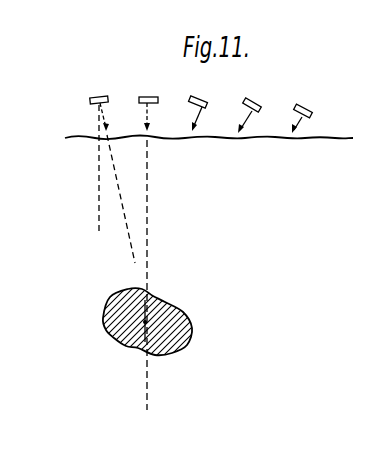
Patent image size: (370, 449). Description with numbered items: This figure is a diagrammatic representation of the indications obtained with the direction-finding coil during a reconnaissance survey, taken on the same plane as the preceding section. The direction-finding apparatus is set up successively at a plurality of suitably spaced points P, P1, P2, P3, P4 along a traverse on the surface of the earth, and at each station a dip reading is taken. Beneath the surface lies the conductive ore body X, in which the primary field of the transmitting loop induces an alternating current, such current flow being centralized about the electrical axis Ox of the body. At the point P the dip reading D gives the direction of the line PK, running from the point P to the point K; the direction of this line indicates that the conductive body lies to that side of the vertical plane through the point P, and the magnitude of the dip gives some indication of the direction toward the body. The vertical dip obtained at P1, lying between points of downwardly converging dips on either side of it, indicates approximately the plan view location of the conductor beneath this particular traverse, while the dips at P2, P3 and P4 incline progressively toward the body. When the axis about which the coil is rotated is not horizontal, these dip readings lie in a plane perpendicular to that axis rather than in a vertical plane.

The observation point P is at (102, 96).
The observation point of vertical dip P1 is at (148, 97).
The observation point P2 is at (204, 98).
The observation point P3 is at (259, 101).
The observation point P4 is at (306, 105).
The dip reading D is at (98, 115).
The end point of dip line K is at (121, 210).
The ore body X is at (178, 340).
The electrical axis of the conductive body Ox is at (147, 320).